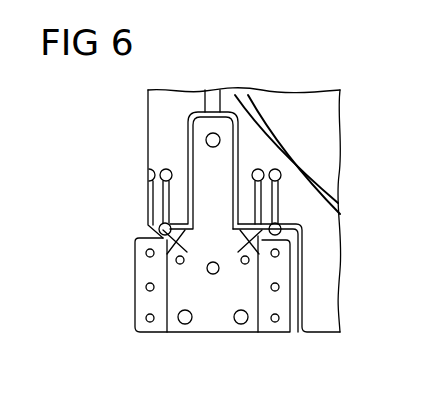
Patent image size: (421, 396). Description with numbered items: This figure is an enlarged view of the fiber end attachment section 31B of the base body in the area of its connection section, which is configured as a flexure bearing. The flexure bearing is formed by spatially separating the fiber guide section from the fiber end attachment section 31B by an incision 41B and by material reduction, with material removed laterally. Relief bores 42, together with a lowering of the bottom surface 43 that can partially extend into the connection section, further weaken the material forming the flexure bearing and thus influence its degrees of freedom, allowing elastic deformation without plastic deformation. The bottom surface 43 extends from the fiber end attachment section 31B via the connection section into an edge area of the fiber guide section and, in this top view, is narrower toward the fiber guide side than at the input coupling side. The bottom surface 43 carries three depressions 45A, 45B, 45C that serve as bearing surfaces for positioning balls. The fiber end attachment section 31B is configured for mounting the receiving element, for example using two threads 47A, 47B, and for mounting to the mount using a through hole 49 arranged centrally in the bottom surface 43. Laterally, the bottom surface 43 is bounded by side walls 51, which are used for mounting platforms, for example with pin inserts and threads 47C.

The fiber end attachment section 31B is at (216, 235).
The incision 41B is at (297, 305).
The relief bores 42 is at (284, 177).
The bottom surface 43 is at (165, 159).
The depression 45A is at (206, 140).
The depression 45B is at (242, 325).
The depression 45C is at (187, 325).
The thread 47A is at (159, 232).
The thread 47B is at (300, 226).
The threads 47C is at (147, 253).
The through hole 49 is at (213, 262).
The side walls 51 is at (153, 271).